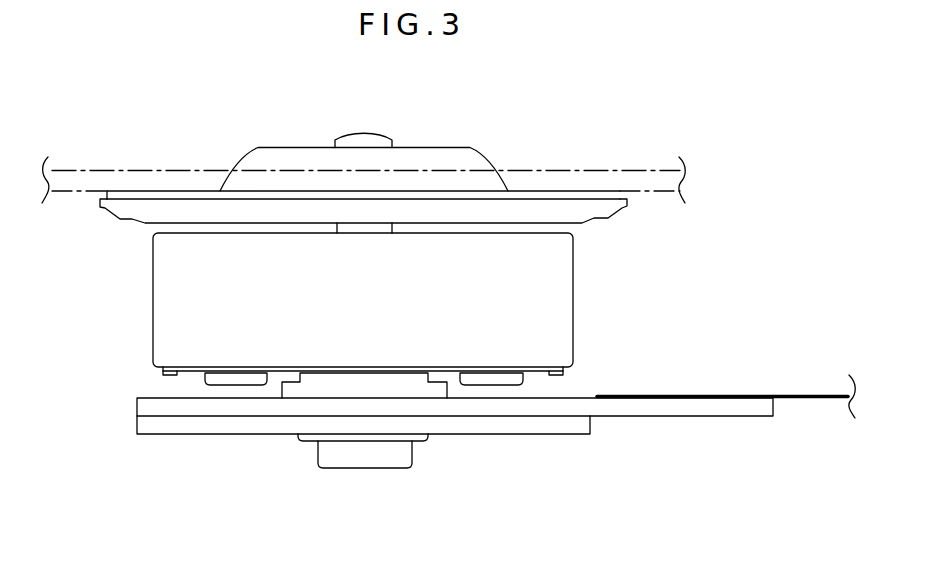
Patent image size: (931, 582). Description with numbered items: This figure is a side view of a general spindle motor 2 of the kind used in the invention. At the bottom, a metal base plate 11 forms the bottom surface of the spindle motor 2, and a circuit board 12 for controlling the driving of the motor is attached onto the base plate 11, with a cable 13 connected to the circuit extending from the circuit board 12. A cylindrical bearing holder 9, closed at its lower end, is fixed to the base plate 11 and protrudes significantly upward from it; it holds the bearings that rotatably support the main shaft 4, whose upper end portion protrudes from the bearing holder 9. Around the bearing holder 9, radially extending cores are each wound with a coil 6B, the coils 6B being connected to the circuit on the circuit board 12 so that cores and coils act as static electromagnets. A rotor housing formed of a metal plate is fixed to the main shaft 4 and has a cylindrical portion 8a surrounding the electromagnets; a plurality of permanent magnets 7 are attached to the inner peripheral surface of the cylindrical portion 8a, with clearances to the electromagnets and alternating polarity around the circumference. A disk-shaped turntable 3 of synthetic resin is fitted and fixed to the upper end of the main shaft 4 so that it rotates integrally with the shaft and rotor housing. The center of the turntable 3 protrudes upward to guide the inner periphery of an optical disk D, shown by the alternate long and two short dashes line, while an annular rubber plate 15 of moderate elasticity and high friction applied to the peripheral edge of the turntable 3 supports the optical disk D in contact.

The optical disk D is at (116, 170).
The turntable 3 is at (242, 149).
The main shaft 4 is at (362, 141).
The annular rubber plate 15 is at (625, 192).
The spindle motor 2 is at (139, 261).
The cylindrical portion 8a is at (155, 330).
The permanent magnets 7 is at (176, 377).
The coil 6B is at (523, 389).
The circuit board 12 is at (705, 411).
The base plate 11 is at (567, 429).
The cable 13 is at (805, 394).
The bearing holder 9 is at (364, 463).